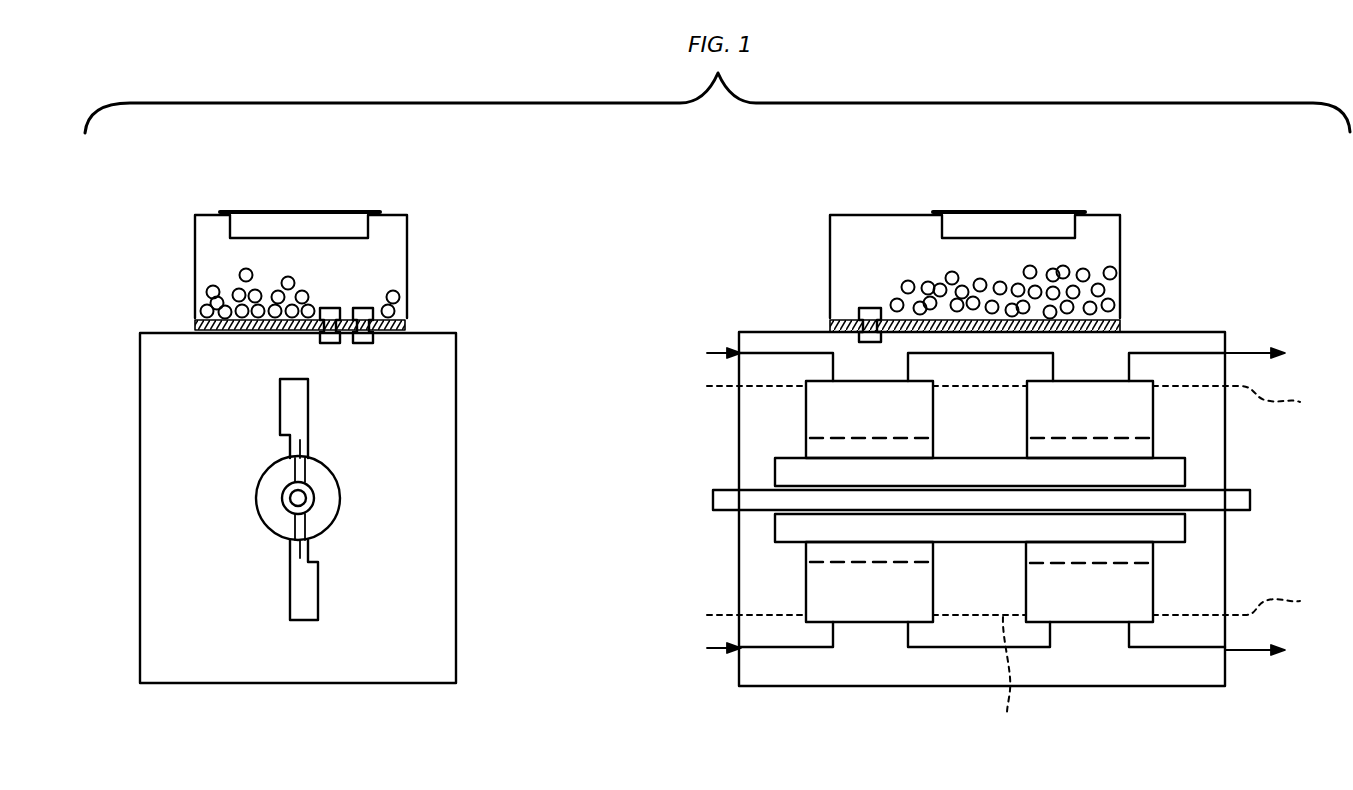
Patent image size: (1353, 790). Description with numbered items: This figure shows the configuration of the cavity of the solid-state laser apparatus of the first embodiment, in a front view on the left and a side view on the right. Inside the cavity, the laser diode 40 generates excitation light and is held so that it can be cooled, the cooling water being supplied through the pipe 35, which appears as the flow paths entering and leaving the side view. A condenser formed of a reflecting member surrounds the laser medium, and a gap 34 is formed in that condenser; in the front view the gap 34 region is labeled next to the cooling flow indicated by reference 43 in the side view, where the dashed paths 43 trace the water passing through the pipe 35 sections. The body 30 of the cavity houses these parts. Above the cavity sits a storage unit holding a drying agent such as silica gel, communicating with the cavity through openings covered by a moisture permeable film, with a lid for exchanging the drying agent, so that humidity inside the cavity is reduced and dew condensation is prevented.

The main body 30 is at (456, 405).
The gap 34 is at (302, 522).
The pipe 35 is at (783, 648).
The laser diode 40 is at (297, 440).
The flow passage 43 is at (1023, 564).